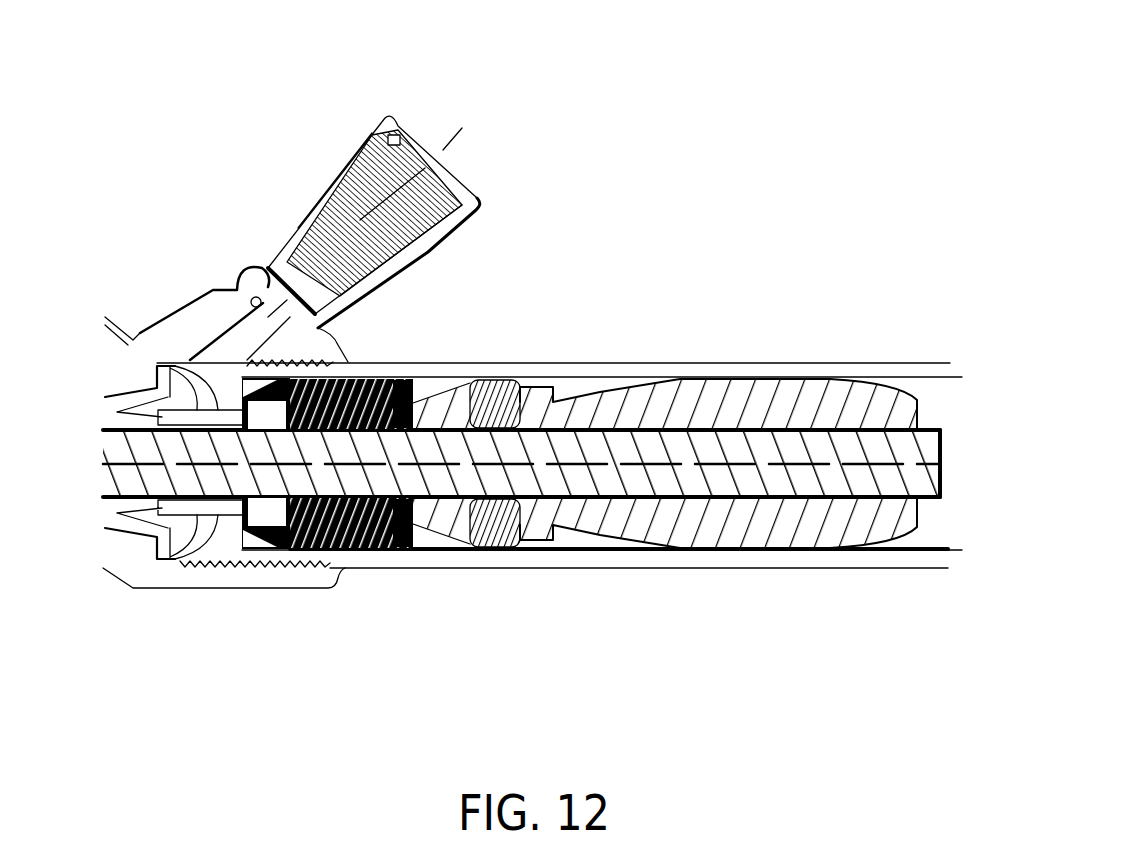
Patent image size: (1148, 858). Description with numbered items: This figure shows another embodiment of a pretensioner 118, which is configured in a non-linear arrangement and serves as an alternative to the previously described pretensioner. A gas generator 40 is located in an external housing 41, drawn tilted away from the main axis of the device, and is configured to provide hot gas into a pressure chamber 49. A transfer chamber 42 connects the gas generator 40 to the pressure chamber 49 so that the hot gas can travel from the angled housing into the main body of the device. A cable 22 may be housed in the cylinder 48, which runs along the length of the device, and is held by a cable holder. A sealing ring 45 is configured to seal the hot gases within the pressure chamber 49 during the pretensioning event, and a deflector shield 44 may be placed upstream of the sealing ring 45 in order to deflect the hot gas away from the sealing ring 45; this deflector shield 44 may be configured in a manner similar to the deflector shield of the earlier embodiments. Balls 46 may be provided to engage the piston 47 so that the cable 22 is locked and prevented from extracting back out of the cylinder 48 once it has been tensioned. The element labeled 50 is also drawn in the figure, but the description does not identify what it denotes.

The pretensioner 118 is at (666, 116).
The cable 22 is at (97, 438).
The gas generator 40 is at (405, 162).
The external housing 41 is at (345, 202).
The transfer chamber 42 is at (258, 297).
The deflector shield 44 is at (260, 553).
The sealing ring 45 is at (335, 552).
The balls 46 is at (400, 376).
The piston 47 is at (510, 382).
The cylinder 48 is at (677, 573).
The pressure chamber 49 is at (215, 542).
The sleeve housing 50 is at (785, 381).